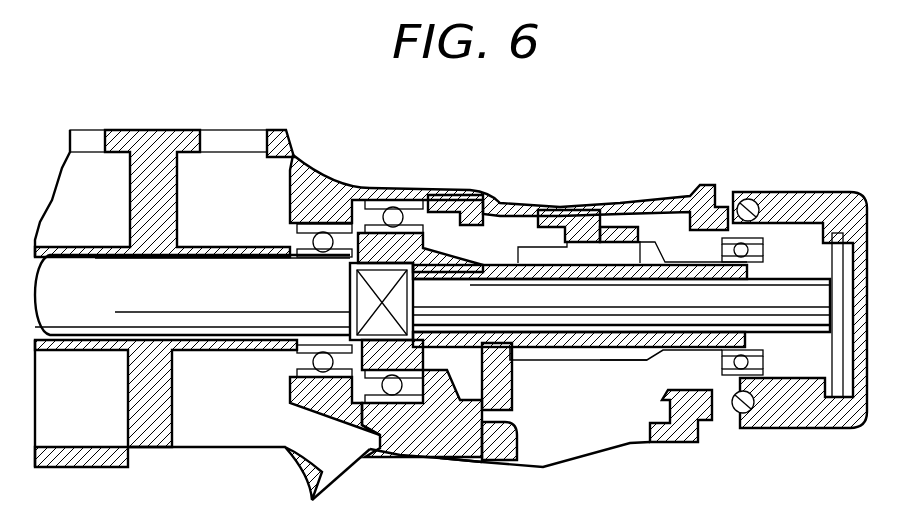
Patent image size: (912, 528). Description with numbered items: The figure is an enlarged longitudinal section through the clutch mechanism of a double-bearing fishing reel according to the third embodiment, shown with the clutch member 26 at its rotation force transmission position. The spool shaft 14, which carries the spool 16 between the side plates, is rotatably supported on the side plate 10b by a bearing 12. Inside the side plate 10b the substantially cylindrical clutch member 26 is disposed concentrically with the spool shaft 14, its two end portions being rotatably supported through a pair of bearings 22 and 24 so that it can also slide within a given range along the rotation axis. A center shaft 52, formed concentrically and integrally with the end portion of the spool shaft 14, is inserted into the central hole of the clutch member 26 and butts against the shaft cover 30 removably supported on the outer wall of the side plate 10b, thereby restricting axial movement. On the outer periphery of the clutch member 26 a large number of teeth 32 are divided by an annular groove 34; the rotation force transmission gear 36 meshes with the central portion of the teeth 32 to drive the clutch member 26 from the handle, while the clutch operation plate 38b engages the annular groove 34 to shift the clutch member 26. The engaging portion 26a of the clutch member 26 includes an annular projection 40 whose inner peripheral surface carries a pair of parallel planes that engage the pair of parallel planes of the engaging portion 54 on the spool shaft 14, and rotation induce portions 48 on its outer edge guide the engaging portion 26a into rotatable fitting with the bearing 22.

The side plate 10b is at (330, 188).
The bearing 12 is at (288, 372).
The spool shaft 14 is at (257, 270).
The spool 16 is at (290, 152).
The bearing 22 is at (413, 190).
The bearing 24 is at (762, 207).
The clutch member 26 is at (578, 347).
The engaging portion 26a is at (470, 452).
The shaft cover 30 is at (843, 193).
The teeth 32 is at (622, 358).
The annular groove 34 is at (515, 255).
The rotation force transmission gear 36 is at (620, 212).
The clutch operation plate 38b is at (503, 398).
The annular projection 40 is at (407, 395).
The rotation induce portions 48 is at (358, 183).
The center shaft 52 is at (661, 300).
The engaging portion 54 is at (360, 298).